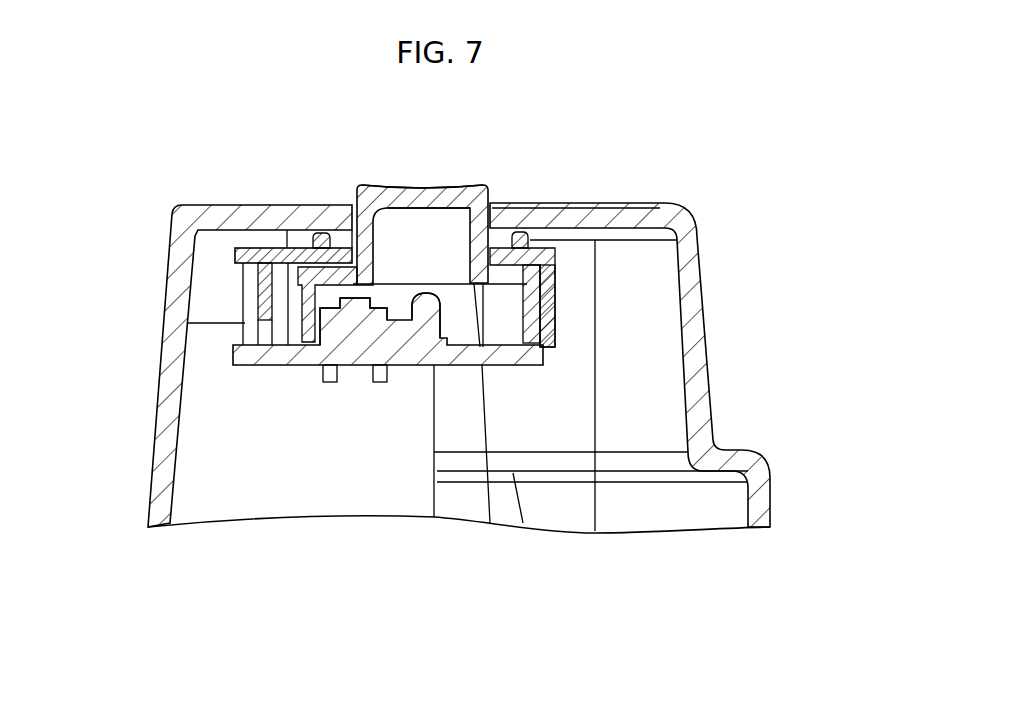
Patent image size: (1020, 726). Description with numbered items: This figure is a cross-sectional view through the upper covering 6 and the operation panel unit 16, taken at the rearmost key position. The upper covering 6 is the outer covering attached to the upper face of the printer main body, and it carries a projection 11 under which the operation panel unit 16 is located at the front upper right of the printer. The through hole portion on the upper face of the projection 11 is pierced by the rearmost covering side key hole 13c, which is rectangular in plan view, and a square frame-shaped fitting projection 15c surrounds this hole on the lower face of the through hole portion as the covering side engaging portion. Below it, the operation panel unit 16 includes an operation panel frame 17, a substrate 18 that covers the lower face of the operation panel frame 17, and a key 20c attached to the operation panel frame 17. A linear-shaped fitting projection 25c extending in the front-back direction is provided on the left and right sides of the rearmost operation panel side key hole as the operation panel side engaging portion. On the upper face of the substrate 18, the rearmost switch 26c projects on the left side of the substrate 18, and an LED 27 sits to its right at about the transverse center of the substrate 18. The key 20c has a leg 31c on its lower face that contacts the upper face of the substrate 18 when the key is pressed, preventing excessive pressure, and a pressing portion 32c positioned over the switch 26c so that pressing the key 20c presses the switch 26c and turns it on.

The upper covering 6 is at (306, 190).
The projection 11 is at (517, 203).
The rearmost covering side key hole 13c is at (395, 188).
The key 20c is at (416, 188).
The linear-shaped fitting projection 25c is at (392, 208).
The rearmost switch 26c is at (327, 352).
The leg 31c is at (307, 352).
The operation panel frame 17 is at (555, 278).
The LED 27 is at (541, 310).
The operation panel unit 16 is at (562, 330).
The square frame-shaped fitting projection 15c is at (372, 246).
The substrate 18 is at (360, 366).
The pressing portion 32c is at (447, 272).